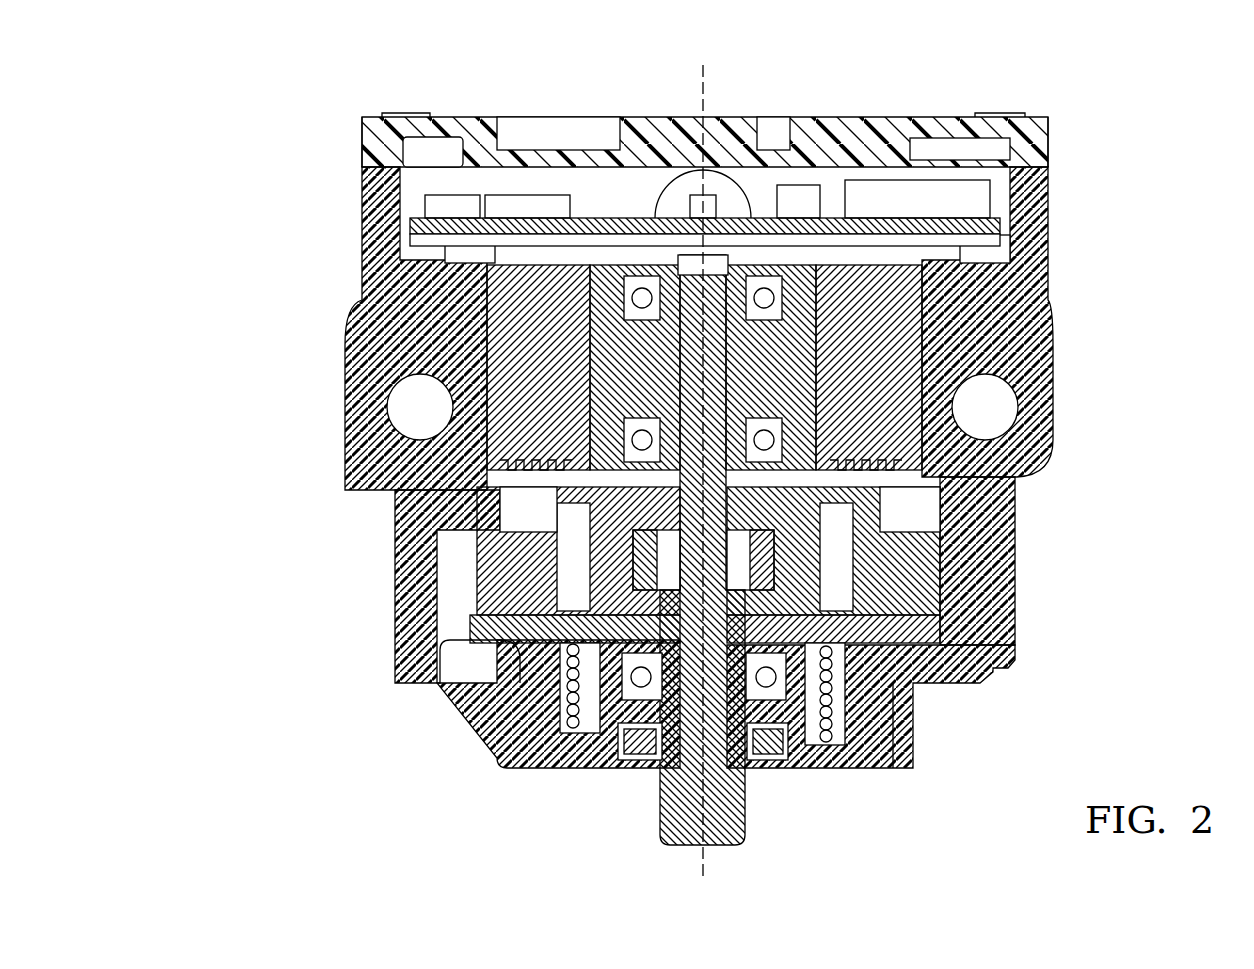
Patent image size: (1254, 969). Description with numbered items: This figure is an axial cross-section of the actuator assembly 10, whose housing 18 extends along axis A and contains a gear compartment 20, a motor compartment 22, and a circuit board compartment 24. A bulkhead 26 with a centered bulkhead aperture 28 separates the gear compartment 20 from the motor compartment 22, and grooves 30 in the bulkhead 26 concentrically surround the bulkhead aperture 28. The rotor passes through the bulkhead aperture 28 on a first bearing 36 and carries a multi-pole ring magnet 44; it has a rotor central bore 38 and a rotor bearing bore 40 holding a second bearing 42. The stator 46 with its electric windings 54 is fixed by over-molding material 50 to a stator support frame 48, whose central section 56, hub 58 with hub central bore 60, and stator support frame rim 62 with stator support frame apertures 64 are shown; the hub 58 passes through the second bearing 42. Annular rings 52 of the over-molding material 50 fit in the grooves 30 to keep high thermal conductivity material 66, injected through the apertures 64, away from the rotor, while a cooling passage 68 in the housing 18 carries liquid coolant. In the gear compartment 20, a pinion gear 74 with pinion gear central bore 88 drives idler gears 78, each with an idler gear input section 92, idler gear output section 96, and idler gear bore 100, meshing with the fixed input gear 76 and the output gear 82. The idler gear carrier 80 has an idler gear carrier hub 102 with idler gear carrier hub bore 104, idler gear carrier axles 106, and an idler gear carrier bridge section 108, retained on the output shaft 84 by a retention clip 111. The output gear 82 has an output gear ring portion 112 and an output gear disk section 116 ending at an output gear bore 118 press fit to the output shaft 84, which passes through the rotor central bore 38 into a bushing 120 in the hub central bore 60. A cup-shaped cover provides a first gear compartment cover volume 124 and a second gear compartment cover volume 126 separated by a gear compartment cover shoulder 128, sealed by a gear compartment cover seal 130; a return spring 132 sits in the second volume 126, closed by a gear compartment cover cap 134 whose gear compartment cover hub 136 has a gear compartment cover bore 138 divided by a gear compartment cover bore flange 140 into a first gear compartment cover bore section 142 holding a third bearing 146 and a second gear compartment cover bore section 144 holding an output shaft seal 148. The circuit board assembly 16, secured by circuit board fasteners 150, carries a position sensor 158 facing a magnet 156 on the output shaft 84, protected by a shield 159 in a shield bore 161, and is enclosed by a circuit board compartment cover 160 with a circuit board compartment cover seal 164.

The actuator assembly 10 is at (293, 104).
The circuit board assembly 16 is at (385, 230).
The housing 18 is at (355, 215).
The gear compartment 20 is at (465, 548).
The motor compartment 22 is at (545, 330).
The circuit board compartment 24 is at (445, 208).
The bulkhead 26 is at (525, 450).
The bulkhead aperture 28 is at (485, 462).
The grooves 30 is at (545, 412).
The first bearing 36 is at (500, 395).
The rotor central bore 38 is at (990, 407).
The rotor bearing bore 40 is at (460, 246).
The second bearing 42 is at (600, 232).
The multi-pole ring magnet 44 is at (600, 340).
The stator 46 is at (600, 372).
The stator support frame 48 is at (578, 218).
The over-molding material 50 is at (1013, 474).
The annular rings 52 is at (980, 540).
The electric windings 54 is at (522, 405).
The central section 56 is at (534, 245).
The hub 58 is at (660, 245).
The hub central bore 60 is at (725, 196).
The stator support frame rim 62 is at (420, 180).
The stator support frame apertures 64 is at (624, 290).
The high thermal conductivity material 66 is at (905, 350).
The cooling passage 68 is at (395, 398).
The pinion gear 74 is at (947, 590).
The input gear 76 is at (1000, 498).
The idler gears 78 is at (490, 492).
The idler gear carrier 80 is at (587, 652).
The output gear 82 is at (817, 710).
The output shaft 84 is at (745, 790).
The pinion gear central bore 88 is at (960, 580).
The idler gear input section 92 is at (560, 476).
The idler gear output section 96 is at (545, 655).
The idler gear bore 100 is at (935, 685).
The idler gear carrier hub 102 is at (782, 755).
The idler gear carrier hub bore 104 is at (745, 775).
The idler gear carrier axles 106 is at (525, 612).
The idler gear carrier bridge section 108 is at (820, 745).
The retention clip 111 is at (560, 560).
The output gear ring portion 112 is at (470, 522).
The output gear disk section 116 is at (535, 680).
The output gear bore 118 is at (690, 780).
The bushing 120 is at (855, 218).
The first gear compartment cover volume 124 is at (987, 644).
The second gear compartment cover volume 126 is at (903, 745).
The gear compartment cover shoulder 128 is at (960, 680).
The gear compartment cover seal 130 is at (600, 572).
The return spring 132 is at (613, 693).
The gear compartment cover cap 134 is at (866, 768).
The gear compartment cover hub 136 is at (610, 698).
The gear compartment cover bore 138 is at (575, 690).
The gear compartment cover bore flange 140 is at (657, 712).
The first gear compartment cover bore section 142 is at (560, 700).
The second gear compartment cover bore section 144 is at (635, 777).
The third bearing 146 is at (795, 720).
The output shaft seal 148 is at (640, 727).
The circuit board fasteners 150 is at (440, 185).
The magnet 156 is at (672, 208).
The position sensor 158 is at (765, 236).
The shield 159 is at (800, 232).
The circuit board compartment cover 160 is at (925, 125).
The shield bore 161 is at (640, 255).
The circuit board compartment cover seal 164 is at (1032, 160).
The axis A is at (703, 120).